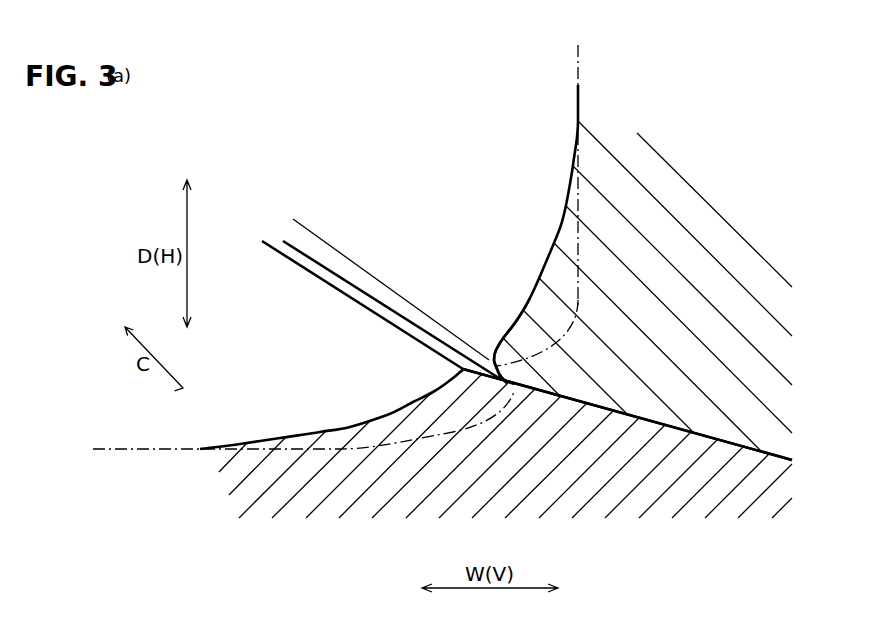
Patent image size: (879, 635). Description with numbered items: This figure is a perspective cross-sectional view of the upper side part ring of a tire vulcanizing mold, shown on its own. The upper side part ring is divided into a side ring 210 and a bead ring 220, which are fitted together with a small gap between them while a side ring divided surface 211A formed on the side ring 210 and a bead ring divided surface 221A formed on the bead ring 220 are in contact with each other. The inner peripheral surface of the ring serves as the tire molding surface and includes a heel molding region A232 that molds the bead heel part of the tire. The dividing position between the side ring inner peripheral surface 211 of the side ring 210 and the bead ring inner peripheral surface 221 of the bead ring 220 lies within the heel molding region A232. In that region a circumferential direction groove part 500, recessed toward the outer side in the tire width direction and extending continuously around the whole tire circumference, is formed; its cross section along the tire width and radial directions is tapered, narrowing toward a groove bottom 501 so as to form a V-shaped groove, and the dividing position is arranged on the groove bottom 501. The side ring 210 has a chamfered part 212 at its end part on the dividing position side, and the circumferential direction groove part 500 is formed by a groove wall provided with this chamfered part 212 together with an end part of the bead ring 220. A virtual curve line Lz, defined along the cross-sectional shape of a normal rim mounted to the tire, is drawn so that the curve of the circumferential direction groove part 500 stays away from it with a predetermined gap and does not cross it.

The virtual curve line Lz is at (578, 62).
The side ring 210 is at (728, 300).
The side ring inner peripheral surface 211 is at (571, 221).
The chamfered part 212 is at (565, 332).
The side ring divided surface 211A is at (692, 424).
The circumferential direction groove part 500 is at (489, 352).
The groove bottom 501 is at (509, 397).
The bead ring inner peripheral surface 221 is at (349, 431).
The bead ring divided surface 221A is at (646, 422).
The bead ring 220 is at (722, 488).
The heel molding region A232 is at (436, 425).